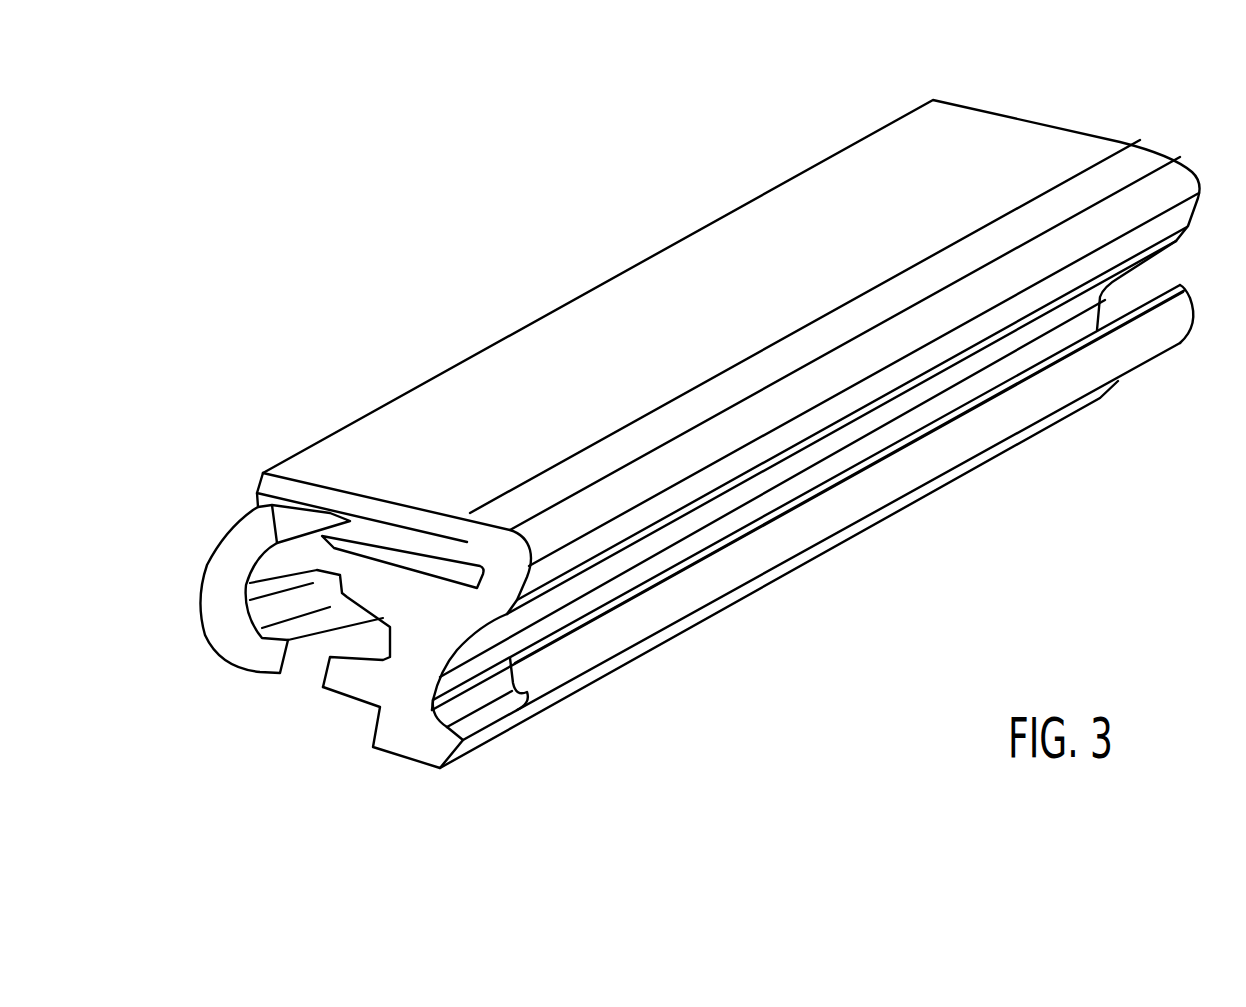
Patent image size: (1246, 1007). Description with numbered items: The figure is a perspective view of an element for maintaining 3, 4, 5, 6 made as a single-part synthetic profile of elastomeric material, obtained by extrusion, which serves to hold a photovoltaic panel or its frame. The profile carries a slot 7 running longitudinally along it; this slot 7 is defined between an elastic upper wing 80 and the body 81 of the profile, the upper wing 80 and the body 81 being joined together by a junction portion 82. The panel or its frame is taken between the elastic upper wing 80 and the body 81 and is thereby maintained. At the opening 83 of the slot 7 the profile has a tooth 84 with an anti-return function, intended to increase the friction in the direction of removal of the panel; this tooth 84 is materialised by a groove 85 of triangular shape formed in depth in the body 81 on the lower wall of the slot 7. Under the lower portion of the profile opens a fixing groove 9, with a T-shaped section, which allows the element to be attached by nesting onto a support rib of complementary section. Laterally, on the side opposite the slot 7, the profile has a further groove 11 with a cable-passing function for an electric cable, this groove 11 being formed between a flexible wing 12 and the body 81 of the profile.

The element for maintaining 3 is at (543, 283).
The element for maintaining 4 is at (731, 434).
The element for maintaining 5 is at (731, 434).
The element for maintaining 6 is at (731, 434).
The slot 7 is at (407, 556).
The fixing groove 9 is at (318, 602).
The groove 11 is at (475, 684).
The flexible wing 12 is at (557, 668).
The upper wing 80 is at (368, 508).
The body 81 is at (397, 587).
The junction portion 82 is at (505, 573).
The opening 83 is at (258, 499).
The tooth 84 is at (253, 527).
The groove 85 is at (263, 543).